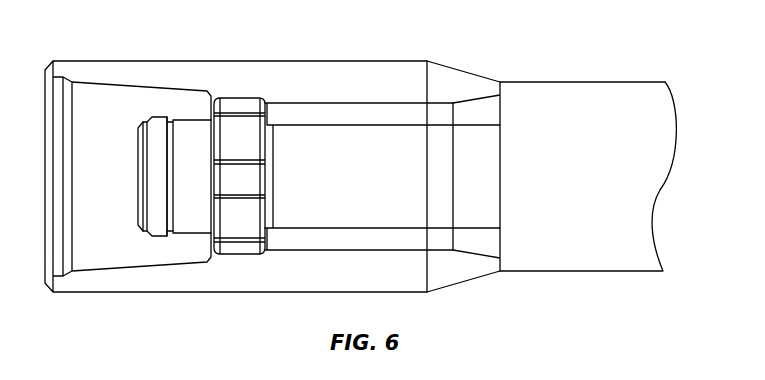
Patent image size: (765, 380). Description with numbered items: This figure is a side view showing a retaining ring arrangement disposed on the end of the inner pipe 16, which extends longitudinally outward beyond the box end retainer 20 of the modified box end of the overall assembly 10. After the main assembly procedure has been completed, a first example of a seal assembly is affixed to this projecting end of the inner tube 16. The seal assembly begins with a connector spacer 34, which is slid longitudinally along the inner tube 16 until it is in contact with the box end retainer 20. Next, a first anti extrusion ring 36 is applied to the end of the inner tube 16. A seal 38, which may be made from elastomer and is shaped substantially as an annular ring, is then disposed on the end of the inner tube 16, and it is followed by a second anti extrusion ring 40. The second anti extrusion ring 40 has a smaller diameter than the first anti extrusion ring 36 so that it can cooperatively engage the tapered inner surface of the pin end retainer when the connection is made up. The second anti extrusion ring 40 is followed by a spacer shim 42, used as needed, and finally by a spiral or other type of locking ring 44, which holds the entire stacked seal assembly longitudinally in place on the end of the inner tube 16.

The stem / shaft 10 is at (463, 65).
The inner pipe 16 is at (355, 228).
The box end retainer 20 is at (267, 96).
The connector spacer 34 is at (201, 93).
The first anti extrusion ring 36 is at (176, 120).
The seal 38 is at (165, 115).
The second anti extrusion ring 40 is at (149, 236).
The spacer shim 42 is at (145, 232).
The locking ring 44 is at (138, 225).